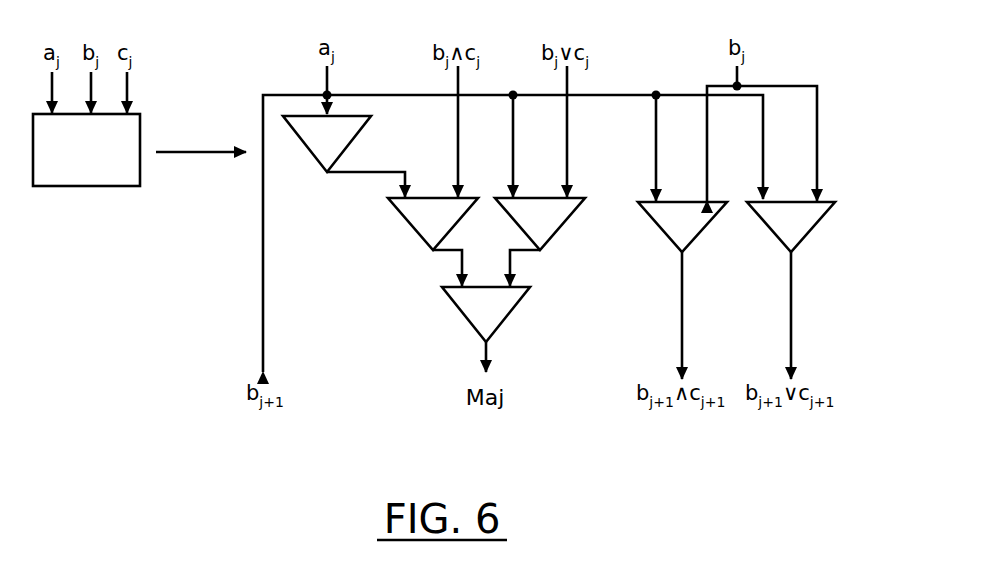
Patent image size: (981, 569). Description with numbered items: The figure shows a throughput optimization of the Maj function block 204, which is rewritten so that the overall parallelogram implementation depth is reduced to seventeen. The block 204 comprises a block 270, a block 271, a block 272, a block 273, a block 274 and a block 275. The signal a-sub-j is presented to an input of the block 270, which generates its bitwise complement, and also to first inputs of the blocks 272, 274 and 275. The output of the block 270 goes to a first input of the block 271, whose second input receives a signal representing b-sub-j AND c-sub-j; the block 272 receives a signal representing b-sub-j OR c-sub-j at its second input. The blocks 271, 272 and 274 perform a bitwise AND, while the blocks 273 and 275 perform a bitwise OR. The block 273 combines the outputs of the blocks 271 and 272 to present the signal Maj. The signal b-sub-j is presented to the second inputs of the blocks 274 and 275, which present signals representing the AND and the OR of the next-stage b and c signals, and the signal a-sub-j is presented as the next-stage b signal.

The function block (Maj) 204 is at (97, 186).
The block (or circuit) 270 is at (305, 149).
The block (or circuit) 271 is at (403, 219).
The block (or circuit) 272 is at (568, 221).
The block (or circuit) 273 is at (512, 308).
The block (or circuit) 274 is at (708, 222).
The block (or circuit) 275 is at (816, 222).